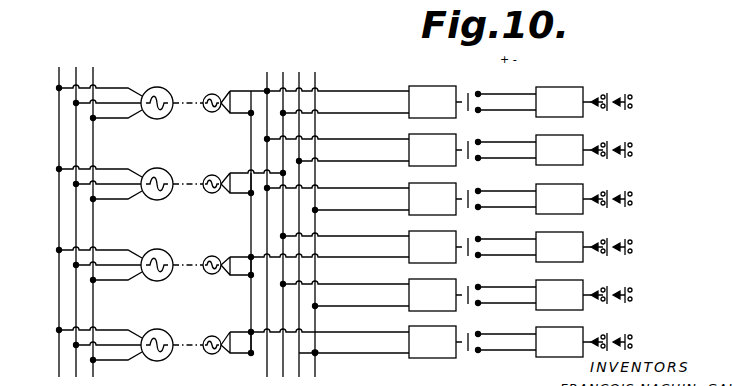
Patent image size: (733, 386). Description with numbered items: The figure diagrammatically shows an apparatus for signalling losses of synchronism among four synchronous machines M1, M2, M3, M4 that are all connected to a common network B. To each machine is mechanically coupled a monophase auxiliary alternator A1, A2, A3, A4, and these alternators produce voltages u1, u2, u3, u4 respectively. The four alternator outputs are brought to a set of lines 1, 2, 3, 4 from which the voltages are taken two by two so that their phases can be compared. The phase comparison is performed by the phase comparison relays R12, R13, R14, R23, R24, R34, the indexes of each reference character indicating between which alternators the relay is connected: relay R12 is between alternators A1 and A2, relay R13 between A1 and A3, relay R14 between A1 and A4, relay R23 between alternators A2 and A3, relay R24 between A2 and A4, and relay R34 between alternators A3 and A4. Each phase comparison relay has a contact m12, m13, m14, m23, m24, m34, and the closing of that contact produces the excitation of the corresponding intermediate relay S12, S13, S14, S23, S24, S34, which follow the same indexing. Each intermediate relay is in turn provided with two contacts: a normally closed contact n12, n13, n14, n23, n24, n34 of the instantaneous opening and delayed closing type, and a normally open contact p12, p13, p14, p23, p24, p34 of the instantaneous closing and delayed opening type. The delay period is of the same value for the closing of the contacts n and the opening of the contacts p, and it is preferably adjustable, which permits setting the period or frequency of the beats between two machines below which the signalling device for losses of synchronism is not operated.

The common network B is at (76, 207).
The control line 1 is at (267, 214).
The control line 2 is at (283, 214).
The control line 3 is at (299, 214).
The control line 4 is at (315, 214).
The synchronous machine M1 is at (115, 91).
The synchronous machine M2 is at (115, 172).
The synchronous machine M3 is at (115, 253).
The synchronous machine M4 is at (115, 333).
The monophase auxiliary alternator A1 is at (197, 93).
The monophase auxiliary alternator A2 is at (197, 174).
The monophase auxiliary alternator A3 is at (197, 255).
The monophase auxiliary alternator A4 is at (197, 335).
The voltage u1 is at (236, 102).
The voltage u2 is at (236, 183).
The voltage u3 is at (236, 266).
The voltage u4 is at (236, 342).
The phase comparison relay R12 is at (432, 102).
The phase comparison relay R13 is at (432, 150).
The phase comparison relay R14 is at (432, 199).
The phase comparison relay R23 is at (432, 247).
The phase comparison relay R24 is at (432, 295).
The phase comparison relay R34 is at (432, 342).
The contact m12 is at (496, 95).
The contact m13 is at (496, 143).
The contact m14 is at (496, 192).
The contact m23 is at (496, 240).
The contact m24 is at (496, 288).
The contact m34 is at (496, 335).
The intermediate relay S12 is at (559, 102).
The intermediate relay S13 is at (559, 150).
The intermediate relay S14 is at (559, 199).
The intermediate relay S23 is at (559, 247).
The intermediate relay S24 is at (559, 295).
The intermediate relay S34 is at (559, 342).
The normally closed contact n12 is at (597, 92).
The normally closed contact n13 is at (597, 140).
The normally closed contact n14 is at (597, 189).
The normally closed contact n23 is at (597, 237).
The normally closed contact n24 is at (597, 285).
The normally closed contact n34 is at (597, 332).
The normally open contact p12 is at (628, 90).
The normally open contact p13 is at (628, 138).
The normally open contact p14 is at (628, 187).
The normally open contact p23 is at (628, 235).
The normally open contact p24 is at (628, 283).
The normally open contact p34 is at (628, 330).